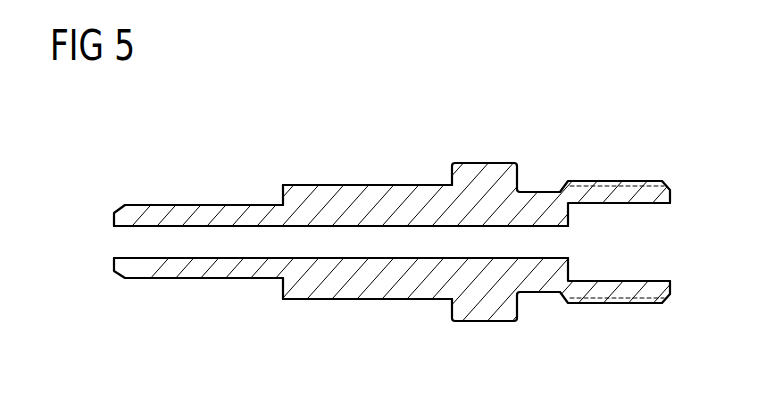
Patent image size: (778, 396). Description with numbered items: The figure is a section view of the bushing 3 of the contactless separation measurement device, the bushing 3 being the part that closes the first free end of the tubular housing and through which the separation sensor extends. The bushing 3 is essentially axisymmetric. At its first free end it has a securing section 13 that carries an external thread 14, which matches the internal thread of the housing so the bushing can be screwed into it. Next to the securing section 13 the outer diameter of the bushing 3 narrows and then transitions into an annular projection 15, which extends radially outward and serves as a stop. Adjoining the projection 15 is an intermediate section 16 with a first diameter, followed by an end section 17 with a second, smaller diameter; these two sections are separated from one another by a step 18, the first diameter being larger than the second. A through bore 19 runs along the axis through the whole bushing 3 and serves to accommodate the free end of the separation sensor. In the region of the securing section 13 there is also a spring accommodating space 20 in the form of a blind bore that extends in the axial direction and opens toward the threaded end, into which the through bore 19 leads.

The bushing 3 is at (229, 115).
The securing section 13 is at (623, 290).
The external thread 14 is at (610, 182).
The annular projection 15 is at (477, 170).
The intermediate section 16 is at (370, 185).
The end section 17 is at (188, 213).
The step 18 is at (280, 201).
The through bore 19 is at (212, 243).
The spring accommodating space 20 is at (657, 247).